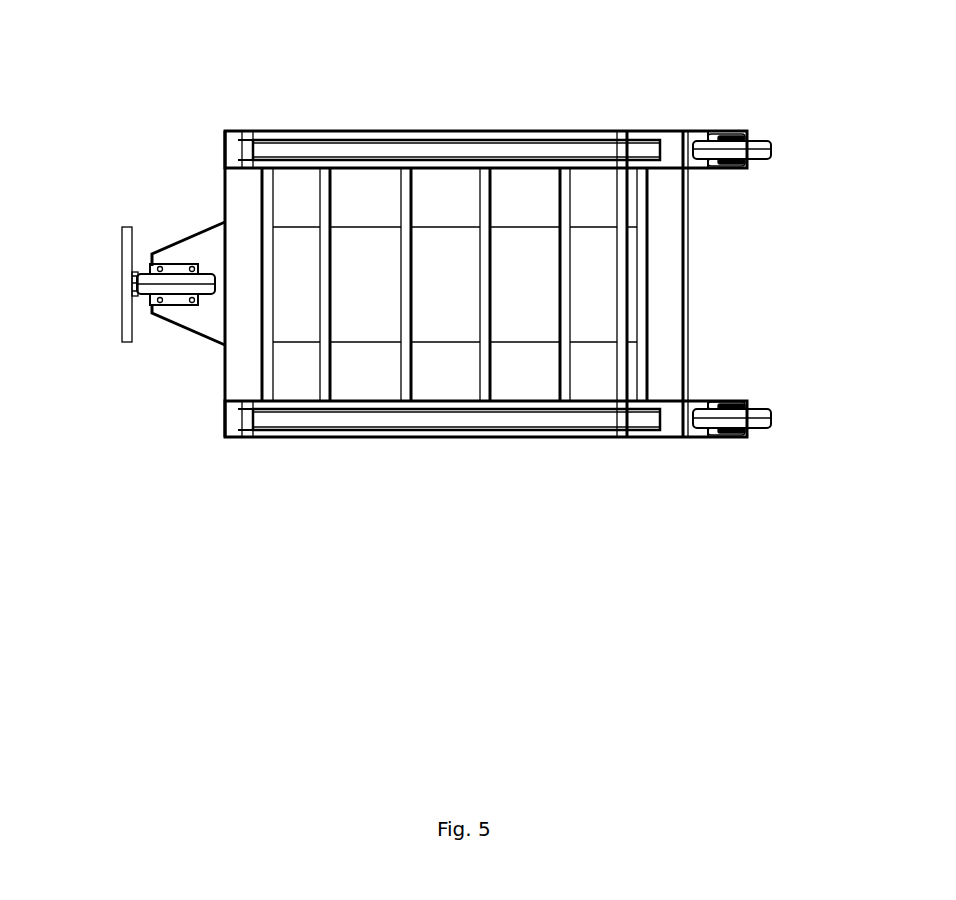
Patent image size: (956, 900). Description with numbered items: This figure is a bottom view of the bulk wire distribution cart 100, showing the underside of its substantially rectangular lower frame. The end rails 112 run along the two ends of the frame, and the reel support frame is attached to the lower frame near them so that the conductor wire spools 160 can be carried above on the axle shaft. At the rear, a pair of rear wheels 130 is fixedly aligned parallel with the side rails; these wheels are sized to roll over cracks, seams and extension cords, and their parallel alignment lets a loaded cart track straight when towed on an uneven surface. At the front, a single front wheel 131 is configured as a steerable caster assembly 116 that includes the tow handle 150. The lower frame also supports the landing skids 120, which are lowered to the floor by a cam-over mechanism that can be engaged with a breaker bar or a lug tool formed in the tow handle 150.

The bulk wire distribution cart 100 is at (238, 116).
The end rails 112 is at (320, 128).
The steerable caster assembly 116 is at (192, 232).
The landing skid 120 is at (432, 139).
The rear wheels 130 is at (757, 137).
The front wheel 131 is at (193, 298).
The tow handle 150 is at (120, 249).
The conductor wire spools 160 is at (491, 196).